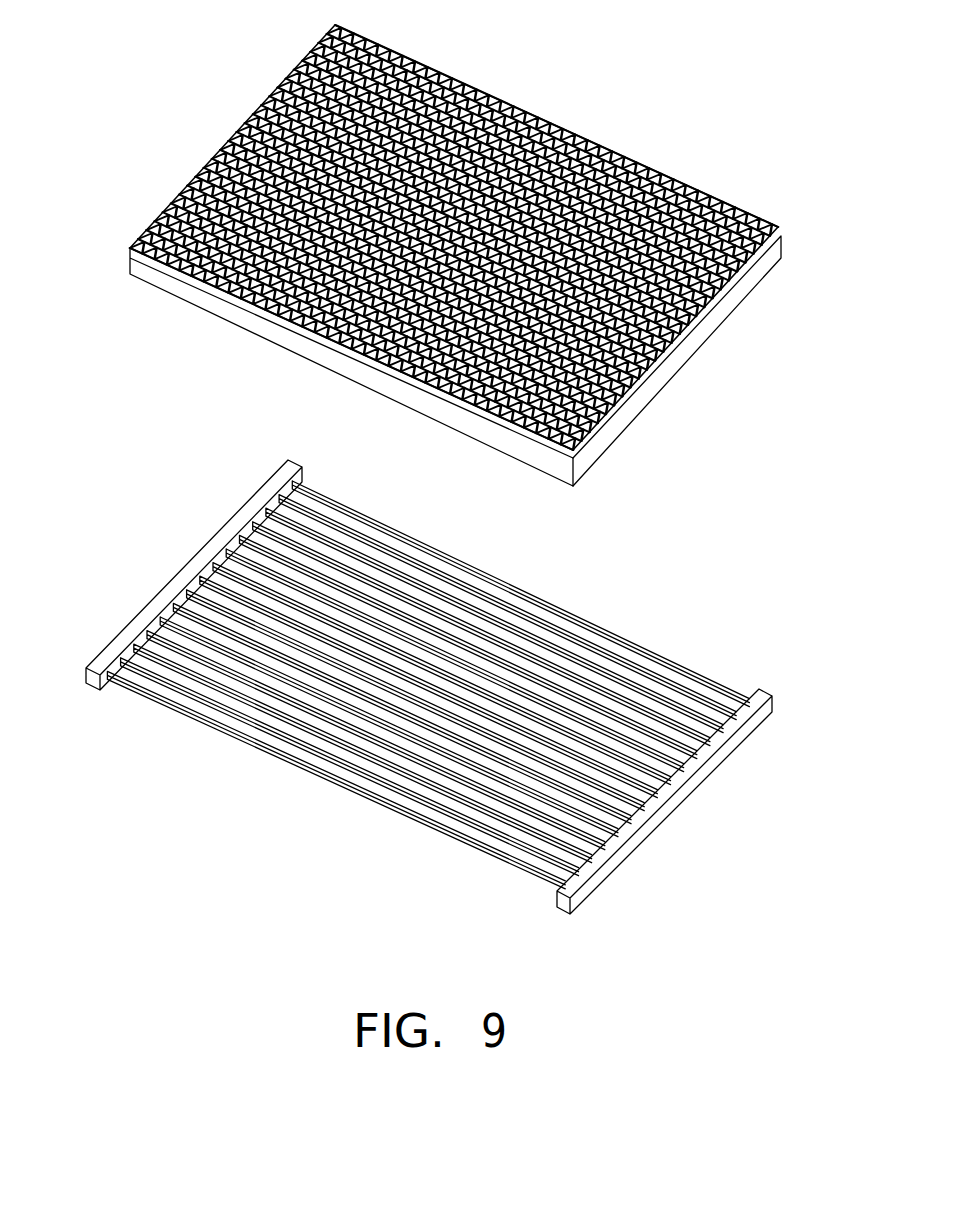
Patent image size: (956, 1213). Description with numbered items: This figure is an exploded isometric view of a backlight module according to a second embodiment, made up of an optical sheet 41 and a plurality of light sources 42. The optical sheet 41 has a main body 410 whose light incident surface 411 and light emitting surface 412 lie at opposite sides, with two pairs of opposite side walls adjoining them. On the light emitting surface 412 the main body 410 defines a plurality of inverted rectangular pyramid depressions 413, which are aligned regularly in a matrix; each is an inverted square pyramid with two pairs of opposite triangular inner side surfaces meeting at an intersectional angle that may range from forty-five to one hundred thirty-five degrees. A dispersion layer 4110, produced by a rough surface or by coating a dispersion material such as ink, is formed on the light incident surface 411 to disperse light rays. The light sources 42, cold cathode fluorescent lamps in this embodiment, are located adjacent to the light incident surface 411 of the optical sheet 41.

The optical sheet 41 is at (458, 255).
The main body 410 is at (458, 361).
The dispersion layer 4110 is at (678, 347).
The light incident surface 411 is at (232, 322).
The light emitting surface 412 is at (454, 237).
The inverted rectangular pyramid depressions 413 is at (438, 68).
The light sources 42 is at (676, 668).